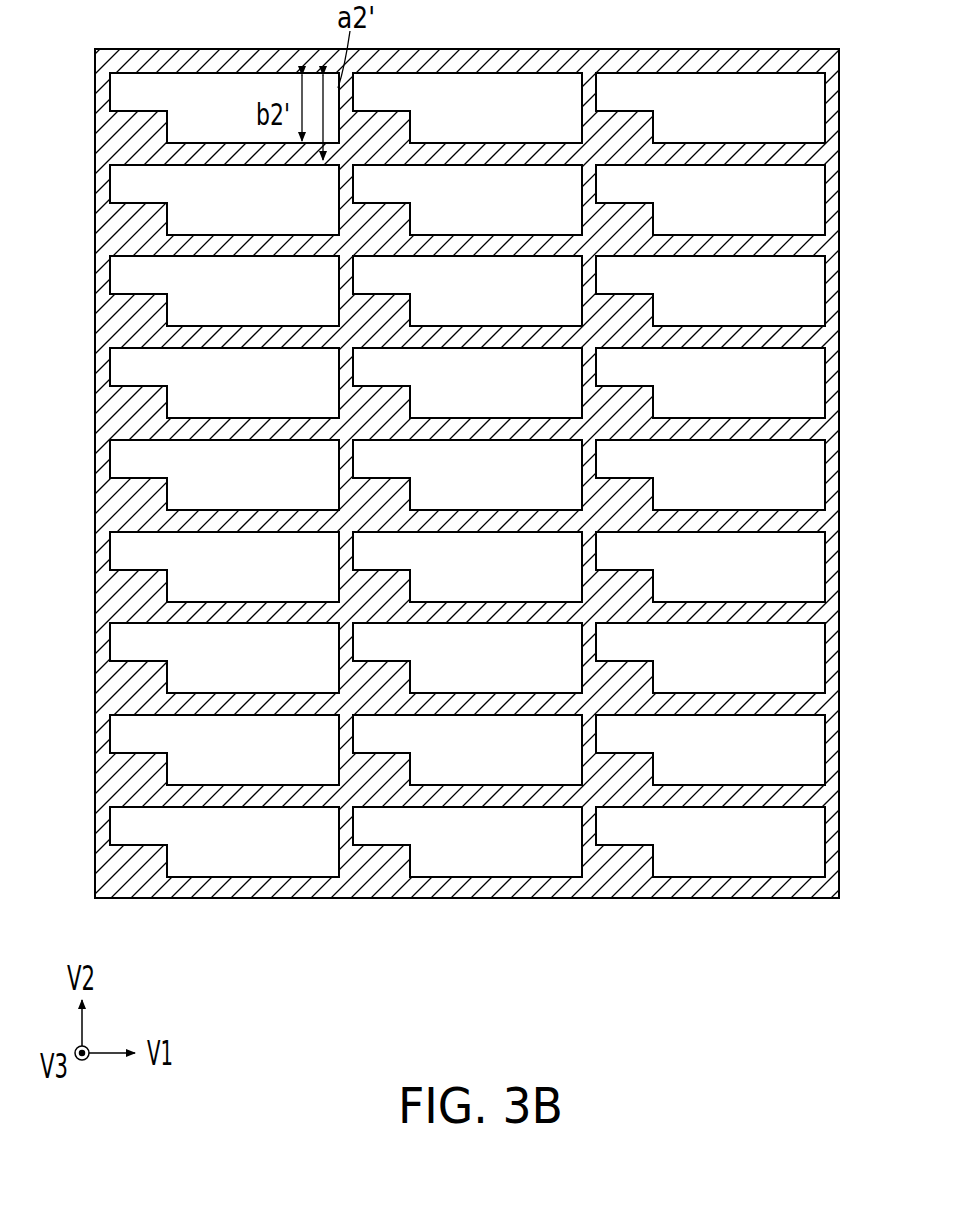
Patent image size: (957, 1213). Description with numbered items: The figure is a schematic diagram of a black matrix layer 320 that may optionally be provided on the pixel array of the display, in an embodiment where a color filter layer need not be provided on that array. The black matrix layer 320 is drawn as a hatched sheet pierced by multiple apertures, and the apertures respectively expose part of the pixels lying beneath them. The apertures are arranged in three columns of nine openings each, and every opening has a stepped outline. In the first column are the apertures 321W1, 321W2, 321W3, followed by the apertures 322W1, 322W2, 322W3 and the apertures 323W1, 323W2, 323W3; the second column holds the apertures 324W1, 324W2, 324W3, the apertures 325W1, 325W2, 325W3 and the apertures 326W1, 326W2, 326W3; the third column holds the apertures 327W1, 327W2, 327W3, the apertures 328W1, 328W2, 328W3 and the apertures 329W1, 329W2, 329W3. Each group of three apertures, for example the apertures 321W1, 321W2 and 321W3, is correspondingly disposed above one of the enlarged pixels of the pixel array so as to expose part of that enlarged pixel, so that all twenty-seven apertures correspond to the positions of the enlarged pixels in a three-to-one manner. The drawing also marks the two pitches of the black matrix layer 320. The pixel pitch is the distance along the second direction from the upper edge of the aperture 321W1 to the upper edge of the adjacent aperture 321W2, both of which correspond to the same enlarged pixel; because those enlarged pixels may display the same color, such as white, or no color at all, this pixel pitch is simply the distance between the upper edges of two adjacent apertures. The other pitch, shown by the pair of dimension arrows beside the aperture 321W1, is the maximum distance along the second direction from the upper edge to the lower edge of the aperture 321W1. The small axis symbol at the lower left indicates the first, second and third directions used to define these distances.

The black matrix layer 320 is at (880, 1009).
The aperture 321W1 is at (172, 118).
The aperture 321W2 is at (172, 210).
The aperture 321W3 is at (172, 301).
The aperture 322W1 is at (201, 393).
The aperture 322W2 is at (201, 485).
The aperture 322W3 is at (201, 577).
The aperture 323W1 is at (201, 668).
The aperture 323W2 is at (201, 760).
The aperture 323W3 is at (201, 852).
The aperture 324W1 is at (444, 118).
The aperture 324W2 is at (444, 210).
The aperture 324W3 is at (444, 301).
The aperture 325W1 is at (444, 393).
The aperture 325W2 is at (444, 485).
The aperture 325W3 is at (444, 577).
The aperture 326W1 is at (444, 668).
The aperture 326W2 is at (444, 760).
The aperture 326W3 is at (444, 852).
The aperture 327W1 is at (687, 118).
The aperture 327W2 is at (687, 210).
The aperture 327W3 is at (687, 301).
The aperture 328W1 is at (687, 393).
The aperture 328W2 is at (687, 485).
The aperture 328W3 is at (687, 577).
The aperture 329W1 is at (687, 668).
The aperture 329W2 is at (687, 760).
The aperture 329W3 is at (687, 852).